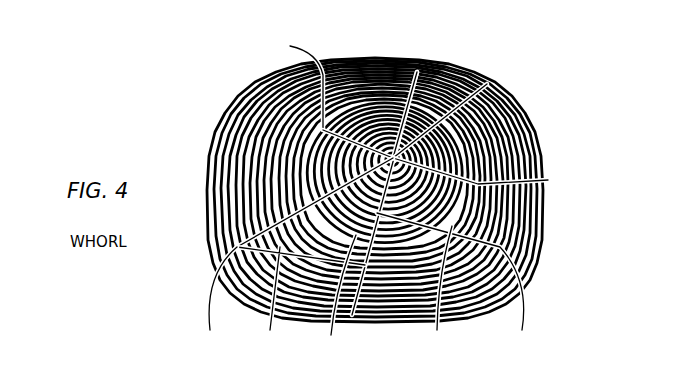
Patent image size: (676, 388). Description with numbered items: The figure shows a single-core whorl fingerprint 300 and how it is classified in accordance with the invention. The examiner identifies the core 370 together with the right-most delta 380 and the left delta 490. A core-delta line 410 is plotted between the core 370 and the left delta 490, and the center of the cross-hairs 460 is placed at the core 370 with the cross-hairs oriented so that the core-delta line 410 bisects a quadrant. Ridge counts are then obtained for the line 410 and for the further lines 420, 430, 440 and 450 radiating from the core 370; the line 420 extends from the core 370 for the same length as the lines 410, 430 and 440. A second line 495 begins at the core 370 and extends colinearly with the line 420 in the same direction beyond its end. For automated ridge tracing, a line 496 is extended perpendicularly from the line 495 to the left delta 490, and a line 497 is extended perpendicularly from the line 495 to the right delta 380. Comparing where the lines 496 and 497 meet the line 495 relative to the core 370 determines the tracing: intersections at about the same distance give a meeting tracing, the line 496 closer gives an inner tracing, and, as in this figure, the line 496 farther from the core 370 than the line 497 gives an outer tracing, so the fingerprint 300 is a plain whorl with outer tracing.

The whorl fingerprint 300 is at (173, 105).
The core 370 is at (487, 84).
The right-most delta 380 is at (457, 282).
The core-delta line 410 is at (238, 246).
The line 420 is at (354, 312).
The line 430 is at (548, 180).
The line 440 is at (445, 88).
The line 450 is at (325, 88).
The cross-hairs 460 is at (470, 44).
The left delta 490 is at (225, 297).
The second line 495 is at (335, 295).
The line 496 is at (301, 296).
The line 497 is at (445, 286).